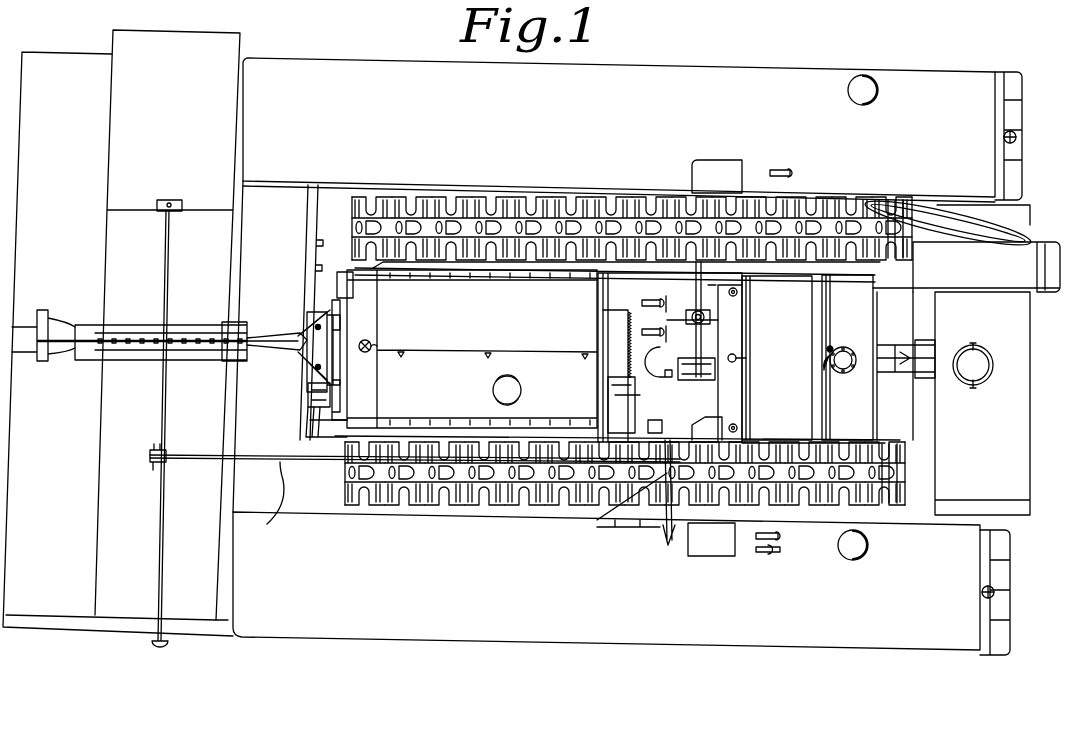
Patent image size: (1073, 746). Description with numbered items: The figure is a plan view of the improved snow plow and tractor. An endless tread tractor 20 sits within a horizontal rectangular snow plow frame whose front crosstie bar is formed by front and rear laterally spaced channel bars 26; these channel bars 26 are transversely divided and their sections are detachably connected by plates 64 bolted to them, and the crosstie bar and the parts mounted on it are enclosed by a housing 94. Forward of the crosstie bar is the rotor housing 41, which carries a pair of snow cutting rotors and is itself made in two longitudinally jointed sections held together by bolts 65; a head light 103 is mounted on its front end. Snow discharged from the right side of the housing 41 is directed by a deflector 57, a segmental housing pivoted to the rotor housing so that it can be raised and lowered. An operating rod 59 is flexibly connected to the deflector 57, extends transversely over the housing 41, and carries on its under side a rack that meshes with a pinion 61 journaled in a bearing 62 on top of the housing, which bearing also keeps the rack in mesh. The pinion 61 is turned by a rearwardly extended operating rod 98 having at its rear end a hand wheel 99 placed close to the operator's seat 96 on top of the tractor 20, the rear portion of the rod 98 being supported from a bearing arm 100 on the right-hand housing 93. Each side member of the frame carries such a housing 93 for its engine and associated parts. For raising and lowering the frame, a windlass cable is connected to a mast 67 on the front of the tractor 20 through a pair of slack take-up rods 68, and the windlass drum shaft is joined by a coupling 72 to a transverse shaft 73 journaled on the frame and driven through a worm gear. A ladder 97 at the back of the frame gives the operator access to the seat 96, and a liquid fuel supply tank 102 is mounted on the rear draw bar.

The endless tread tractor 20 is at (464, 349).
The front crosstie bar channel bars 26 is at (312, 236).
The rotor housing 41 is at (118, 344).
The deflector 57 is at (167, 325).
The operating rod 59 is at (164, 287).
The pinion 61 is at (157, 462).
The bearing 62 is at (164, 454).
The plates 64 is at (317, 291).
The bolts 65 is at (122, 353).
The mast 67 is at (322, 340).
The slack take-up rods 68 is at (318, 370).
The coupling 72 is at (330, 395).
The transverse shaft 73 is at (345, 424).
The housing 93 is at (627, 356).
The housing 94 is at (246, 262).
The seat 96 is at (838, 359).
The ladder 97 is at (1028, 228).
The operating rod 98 is at (273, 505).
The hand wheel 99 is at (668, 484).
The bearing arm 100 is at (665, 472).
The liquid fuel supply tank 102 is at (966, 360).
The head light 103 is at (50, 360).